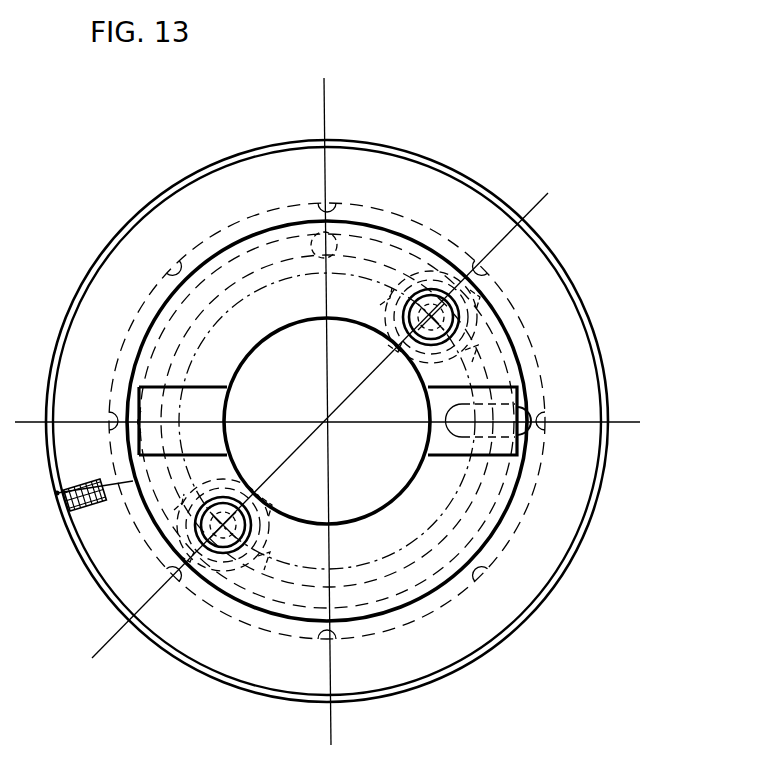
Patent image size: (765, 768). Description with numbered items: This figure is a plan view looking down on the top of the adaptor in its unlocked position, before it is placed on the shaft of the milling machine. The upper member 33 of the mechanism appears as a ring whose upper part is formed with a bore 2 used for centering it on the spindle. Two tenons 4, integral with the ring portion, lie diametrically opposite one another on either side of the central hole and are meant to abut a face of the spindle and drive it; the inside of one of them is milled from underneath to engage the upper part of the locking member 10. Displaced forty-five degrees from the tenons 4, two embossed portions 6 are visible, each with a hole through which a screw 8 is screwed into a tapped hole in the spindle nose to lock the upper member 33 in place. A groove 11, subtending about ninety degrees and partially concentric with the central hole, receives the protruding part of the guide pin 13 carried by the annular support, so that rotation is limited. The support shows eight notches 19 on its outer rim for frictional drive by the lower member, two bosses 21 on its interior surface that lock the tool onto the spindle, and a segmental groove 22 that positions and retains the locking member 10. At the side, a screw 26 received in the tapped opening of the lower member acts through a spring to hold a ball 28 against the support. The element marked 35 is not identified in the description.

The bore 2 is at (398, 616).
The tenons 4 is at (205, 386).
The embossed portions 6 is at (389, 333).
The screw 8 is at (470, 336).
The locking member 10 is at (446, 414).
The groove 11 is at (261, 274).
The guide pin 13 is at (338, 247).
The notches 19 is at (172, 266).
The bosses 21 is at (390, 296).
The segmental groove 22 is at (418, 538).
The screw 26 is at (58, 508).
The ball 28 is at (134, 530).
The upper member 33 is at (588, 540).
The pin circle 35 is at (540, 491).